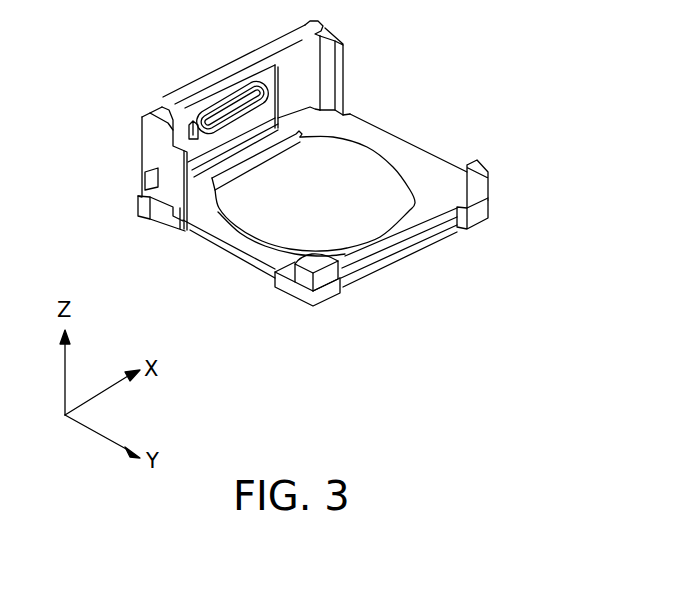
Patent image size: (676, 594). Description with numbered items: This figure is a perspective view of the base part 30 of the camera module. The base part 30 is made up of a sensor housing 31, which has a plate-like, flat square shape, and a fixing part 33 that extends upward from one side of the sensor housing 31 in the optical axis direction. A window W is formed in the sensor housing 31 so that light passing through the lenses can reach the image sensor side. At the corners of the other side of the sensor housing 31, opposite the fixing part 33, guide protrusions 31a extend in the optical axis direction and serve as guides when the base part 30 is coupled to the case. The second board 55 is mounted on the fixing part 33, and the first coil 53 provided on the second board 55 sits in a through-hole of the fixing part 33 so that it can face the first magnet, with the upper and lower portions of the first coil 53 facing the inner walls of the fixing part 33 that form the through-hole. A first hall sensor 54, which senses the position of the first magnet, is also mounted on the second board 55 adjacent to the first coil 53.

The base part 30 is at (46, 103).
The sensor housing 31 is at (212, 215).
The guide protrusions 31a is at (490, 180).
The fixing part 33 is at (157, 98).
The first coil 53 is at (247, 92).
The first hall sensor 54 is at (175, 118).
The second board 55 is at (260, 70).
The window W is at (378, 168).